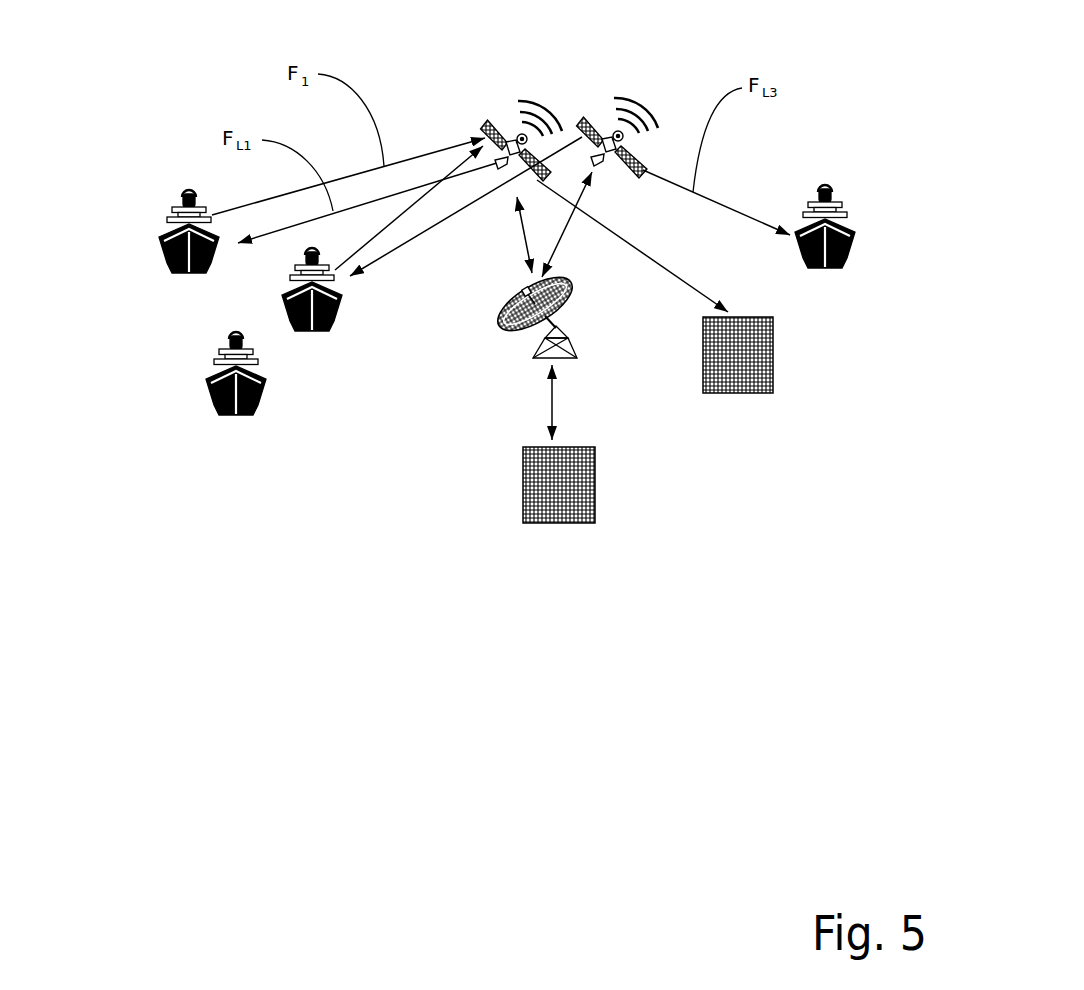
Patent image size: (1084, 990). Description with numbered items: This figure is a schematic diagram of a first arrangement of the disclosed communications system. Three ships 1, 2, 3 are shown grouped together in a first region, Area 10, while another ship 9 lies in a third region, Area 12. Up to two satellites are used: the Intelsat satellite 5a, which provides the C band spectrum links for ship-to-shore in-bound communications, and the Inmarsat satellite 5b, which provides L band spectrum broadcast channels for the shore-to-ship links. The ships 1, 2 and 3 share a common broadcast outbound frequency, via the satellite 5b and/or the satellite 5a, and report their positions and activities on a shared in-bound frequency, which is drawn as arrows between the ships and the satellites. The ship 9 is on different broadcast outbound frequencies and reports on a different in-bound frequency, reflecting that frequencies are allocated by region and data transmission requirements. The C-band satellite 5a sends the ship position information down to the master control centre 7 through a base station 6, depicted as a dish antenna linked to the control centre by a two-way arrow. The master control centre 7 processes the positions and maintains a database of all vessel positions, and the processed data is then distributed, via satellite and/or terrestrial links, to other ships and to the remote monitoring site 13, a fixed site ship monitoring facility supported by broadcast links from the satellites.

The ship 1 is at (207, 385).
The ship 2 is at (163, 250).
The ship 3 is at (318, 330).
The Intelsat satellite 5a is at (510, 122).
The Inmarsat satellite 5b is at (617, 120).
The base station 6 is at (510, 312).
The master control centre 7 is at (552, 524).
The ship 9 is at (855, 235).
The Area 10 is at (213, 468).
The Area 12 is at (820, 345).
The fixed site ship monitoring facility 13 is at (727, 394).